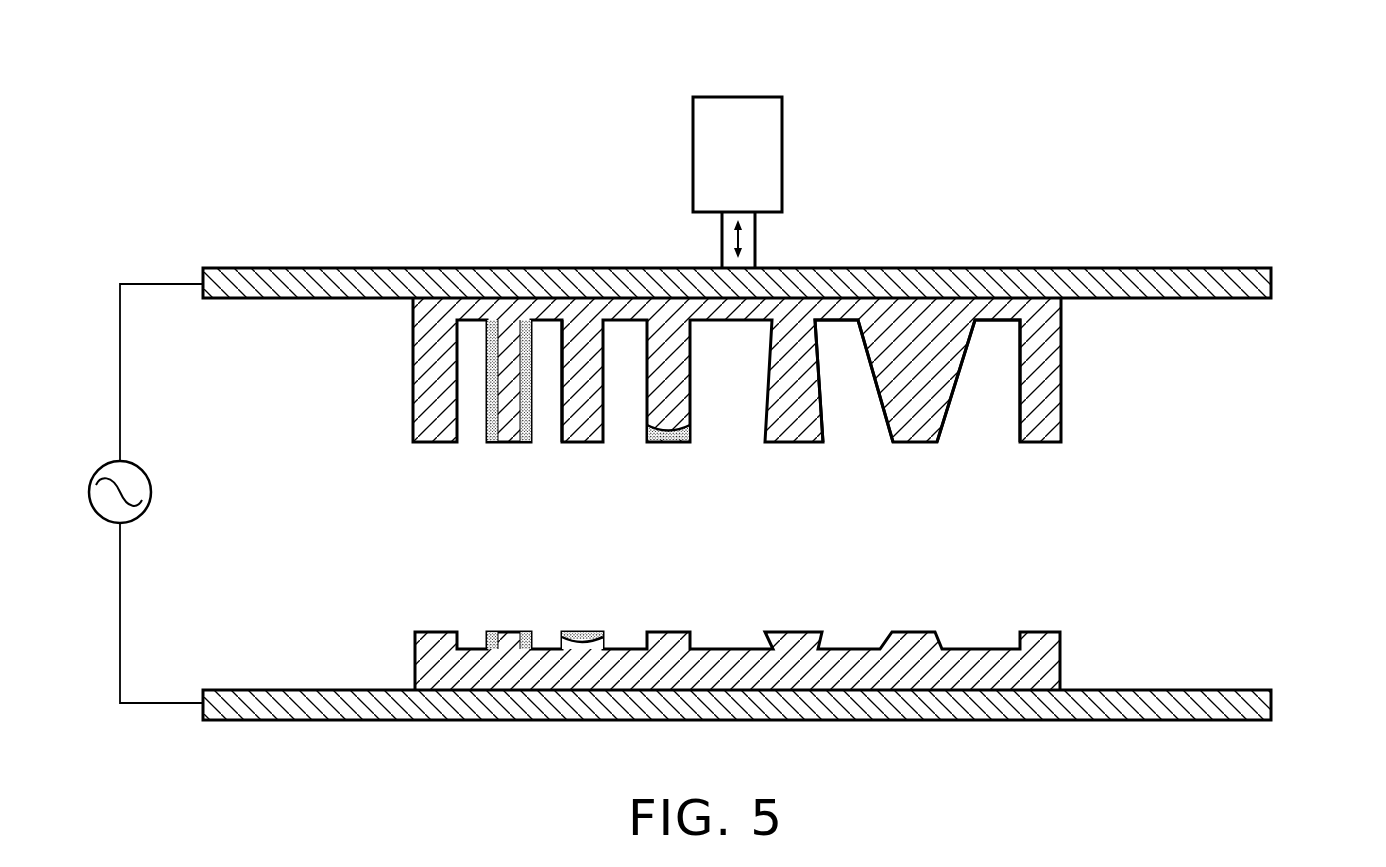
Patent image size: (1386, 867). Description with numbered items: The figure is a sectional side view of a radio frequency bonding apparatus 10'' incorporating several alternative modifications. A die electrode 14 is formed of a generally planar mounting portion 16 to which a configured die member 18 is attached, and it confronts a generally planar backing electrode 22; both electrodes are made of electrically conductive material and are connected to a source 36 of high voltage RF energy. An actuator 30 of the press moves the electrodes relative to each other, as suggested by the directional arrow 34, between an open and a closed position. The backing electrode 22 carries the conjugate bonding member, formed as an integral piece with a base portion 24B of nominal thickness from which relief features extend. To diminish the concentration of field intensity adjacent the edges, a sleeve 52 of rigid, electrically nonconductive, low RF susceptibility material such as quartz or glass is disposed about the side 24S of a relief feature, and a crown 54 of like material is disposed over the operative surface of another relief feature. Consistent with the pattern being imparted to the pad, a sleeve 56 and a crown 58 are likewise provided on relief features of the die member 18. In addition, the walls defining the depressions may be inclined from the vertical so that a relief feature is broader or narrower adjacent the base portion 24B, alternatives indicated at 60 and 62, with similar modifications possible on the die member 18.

The bonding apparatus 10'' is at (737, 404).
The die electrode 14 is at (794, 653).
The mounting portion 16 is at (773, 704).
The die member 18 is at (1060, 659).
The backing electrode 22 is at (1255, 267).
The base portion 24B is at (1008, 310).
The side of relief feature 24S is at (563, 407).
The actuator 30 is at (783, 157).
The directional arrow 34 is at (757, 248).
The source of high voltage RF energy 36 is at (147, 514).
The sleeve 52 is at (486, 421).
The crown 54 is at (655, 443).
The sleeve 56 is at (525, 630).
The crown 58 is at (575, 630).
The flaring relief feature wall alternative 60 is at (987, 402).
The undercut relief feature wall alternative 62 is at (851, 402).